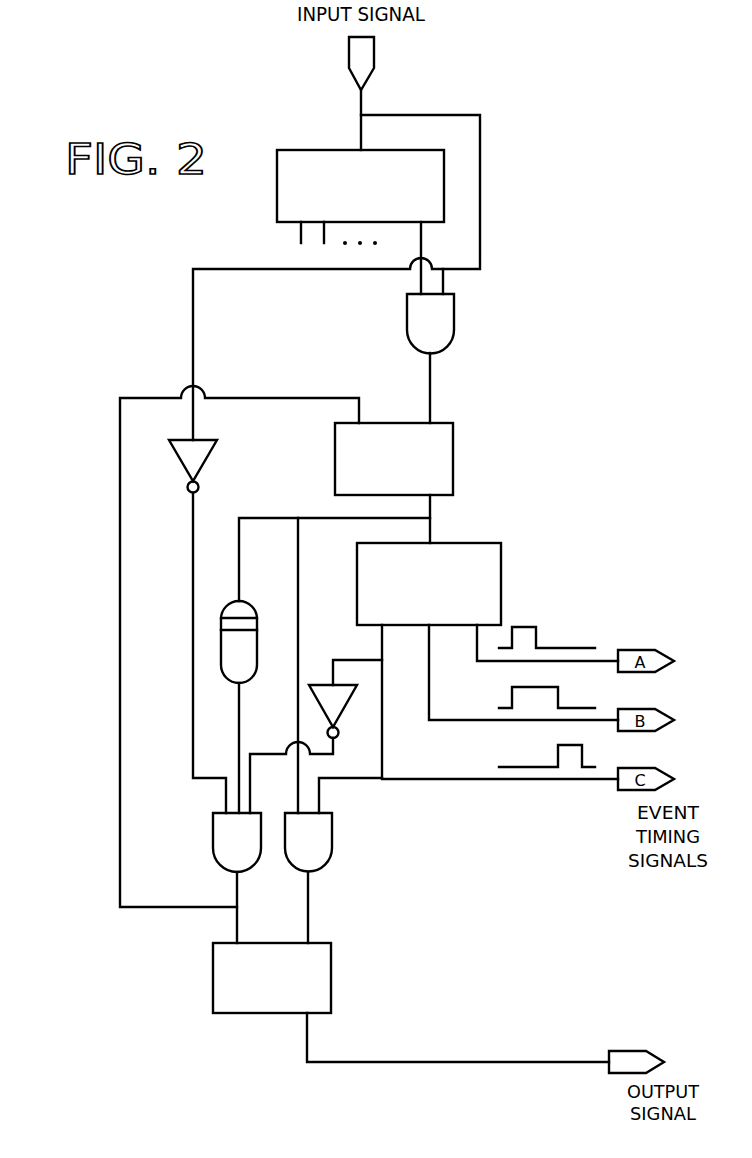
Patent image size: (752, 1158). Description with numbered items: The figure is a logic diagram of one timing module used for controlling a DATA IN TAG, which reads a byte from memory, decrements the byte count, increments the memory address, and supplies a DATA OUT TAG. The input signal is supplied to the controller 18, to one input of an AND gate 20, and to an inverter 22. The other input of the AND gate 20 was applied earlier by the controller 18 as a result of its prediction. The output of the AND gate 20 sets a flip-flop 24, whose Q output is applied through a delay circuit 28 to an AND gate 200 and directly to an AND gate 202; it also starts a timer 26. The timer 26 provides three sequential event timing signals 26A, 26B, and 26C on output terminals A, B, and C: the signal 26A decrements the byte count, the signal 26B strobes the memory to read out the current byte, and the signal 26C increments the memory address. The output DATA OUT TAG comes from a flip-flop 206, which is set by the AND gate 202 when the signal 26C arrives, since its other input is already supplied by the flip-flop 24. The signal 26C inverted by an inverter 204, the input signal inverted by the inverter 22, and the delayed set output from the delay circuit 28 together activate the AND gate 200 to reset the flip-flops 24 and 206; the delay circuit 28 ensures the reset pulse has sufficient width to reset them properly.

The controller 18 is at (330, 148).
The AND gate 20 is at (458, 321).
The inverter 22 is at (203, 460).
The flip-flop 24 is at (453, 463).
The timer 26 is at (501, 566).
The event timing signal 26A is at (565, 647).
The event timing signal 26B is at (573, 707).
The event timing signal 26C is at (531, 765).
The delay circuit 28 is at (257, 668).
The AND gate 200 is at (213, 850).
The AND gate 202 is at (335, 843).
The inverter 204 is at (337, 712).
The flip-flop 206 is at (331, 957).